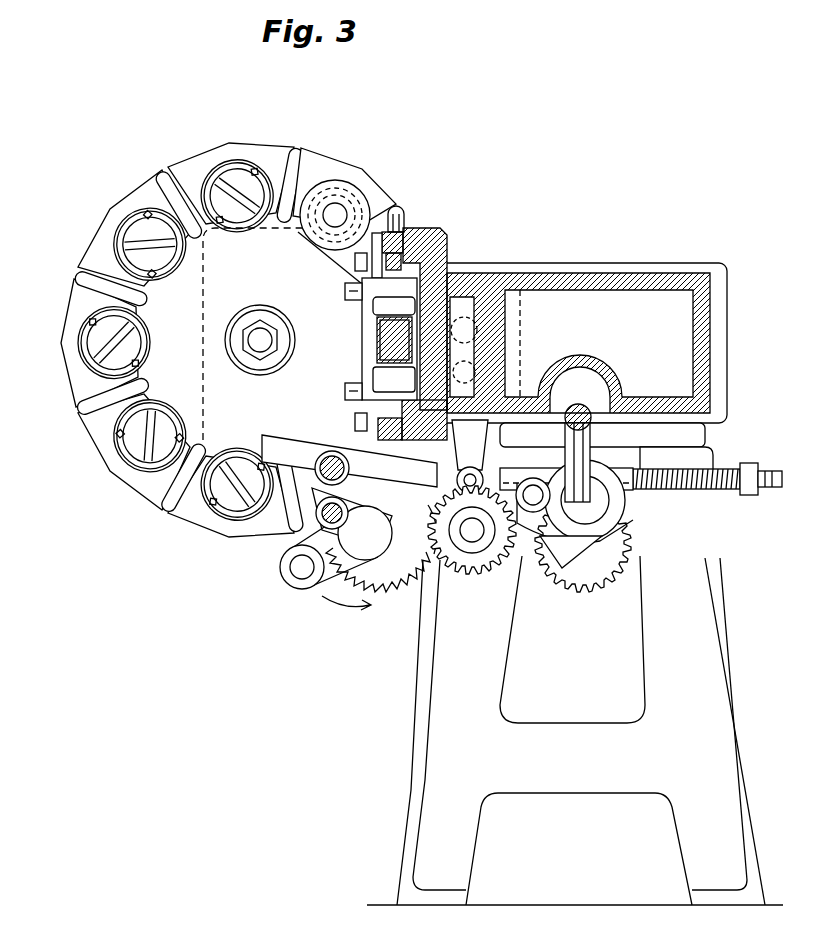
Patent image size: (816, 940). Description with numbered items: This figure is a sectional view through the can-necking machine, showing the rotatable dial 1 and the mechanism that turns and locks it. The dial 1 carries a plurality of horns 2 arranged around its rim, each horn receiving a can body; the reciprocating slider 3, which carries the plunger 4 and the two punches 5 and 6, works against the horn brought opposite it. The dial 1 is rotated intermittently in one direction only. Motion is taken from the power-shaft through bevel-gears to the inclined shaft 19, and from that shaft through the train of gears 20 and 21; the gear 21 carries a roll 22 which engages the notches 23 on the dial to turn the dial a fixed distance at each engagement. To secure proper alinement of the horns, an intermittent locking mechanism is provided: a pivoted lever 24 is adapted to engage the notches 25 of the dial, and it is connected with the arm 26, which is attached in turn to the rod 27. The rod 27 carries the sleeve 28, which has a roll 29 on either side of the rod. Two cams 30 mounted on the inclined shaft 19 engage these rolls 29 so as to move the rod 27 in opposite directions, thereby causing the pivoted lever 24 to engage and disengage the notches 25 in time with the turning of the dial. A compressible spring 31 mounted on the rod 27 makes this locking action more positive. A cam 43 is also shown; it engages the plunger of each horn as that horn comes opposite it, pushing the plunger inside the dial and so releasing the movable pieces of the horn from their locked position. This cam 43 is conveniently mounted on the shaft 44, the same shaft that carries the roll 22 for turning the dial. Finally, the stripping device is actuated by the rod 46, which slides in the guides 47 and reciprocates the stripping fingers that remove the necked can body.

The rotatable dial 1 is at (72, 382).
The horns 2 is at (240, 178).
The reciprocating slider 3 is at (373, 343).
The plunger 4 is at (347, 185).
The punch 5 is at (400, 262).
The punch 6 is at (372, 375).
The inclined shaft 19 is at (590, 408).
The gear 20 is at (485, 587).
The gear 21 is at (387, 583).
The roll 22 is at (353, 542).
The notches 23 is at (107, 397).
The pivoted lever 24 is at (465, 307).
The notches 25 is at (115, 463).
The arm 26 is at (480, 440).
The rod 27 is at (626, 500).
The sleeve 28 is at (623, 470).
The rolls 29 is at (533, 512).
The cams 30 is at (557, 583).
The compressible spring 31 is at (712, 493).
The cam 43 is at (422, 575).
The shaft 44 is at (333, 582).
The rod 46 is at (325, 465).
The guides 47 is at (322, 520).